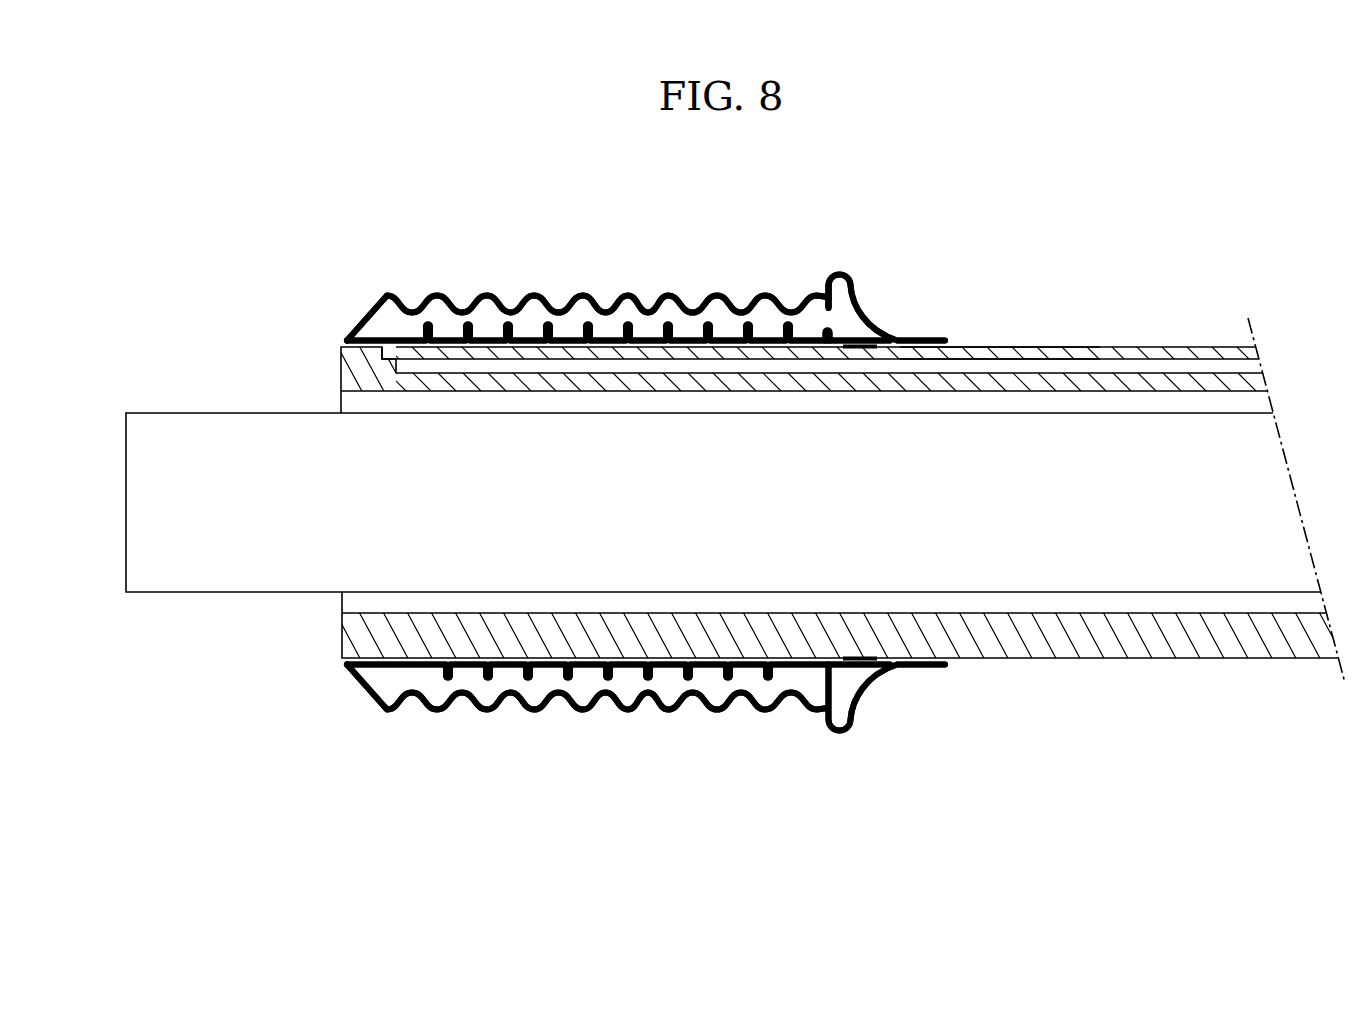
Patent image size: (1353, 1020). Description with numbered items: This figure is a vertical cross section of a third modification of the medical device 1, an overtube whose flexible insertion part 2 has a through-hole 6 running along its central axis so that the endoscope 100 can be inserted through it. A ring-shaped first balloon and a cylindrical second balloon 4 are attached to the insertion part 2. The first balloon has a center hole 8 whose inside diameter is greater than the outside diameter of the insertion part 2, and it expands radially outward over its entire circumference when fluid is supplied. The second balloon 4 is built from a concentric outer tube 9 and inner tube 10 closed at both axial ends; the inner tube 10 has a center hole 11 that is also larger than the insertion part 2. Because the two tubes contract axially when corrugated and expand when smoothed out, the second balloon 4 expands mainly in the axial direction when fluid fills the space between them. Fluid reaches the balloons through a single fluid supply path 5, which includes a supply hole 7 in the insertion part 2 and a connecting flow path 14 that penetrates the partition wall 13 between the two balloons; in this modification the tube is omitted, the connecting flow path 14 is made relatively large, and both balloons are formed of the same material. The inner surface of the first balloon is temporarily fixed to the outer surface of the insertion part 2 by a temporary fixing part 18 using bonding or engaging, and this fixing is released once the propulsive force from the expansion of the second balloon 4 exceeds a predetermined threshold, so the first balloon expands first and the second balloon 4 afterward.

The medical device 1 is at (301, 330).
The insertion part 2 is at (835, 320).
The second balloon 4 is at (587, 266).
The fluid supply path 5 is at (367, 404).
The through-hole 6 is at (828, 651).
The supply hole 7 is at (1050, 315).
The center hole 8 is at (950, 310).
The outer tube 9 is at (587, 731).
The inner tube 10 is at (618, 717).
The center hole 11 is at (618, 294).
The partition wall 13 is at (868, 278).
The connecting flow path 14 is at (803, 292).
The temporary fixing part 18 is at (860, 503).
The endoscope 100 is at (688, 490).